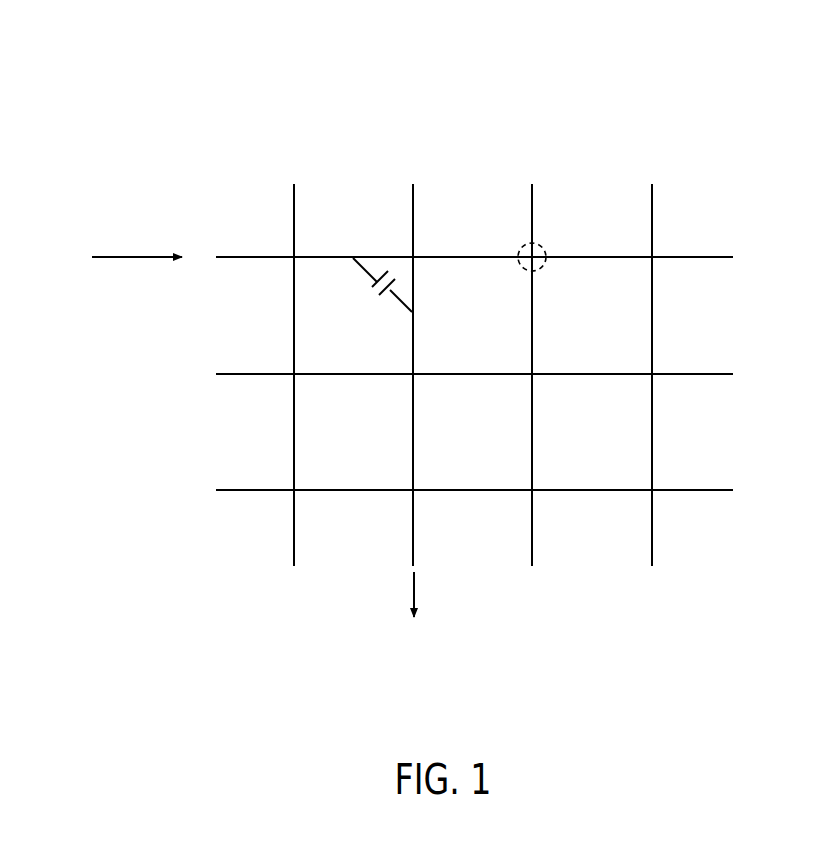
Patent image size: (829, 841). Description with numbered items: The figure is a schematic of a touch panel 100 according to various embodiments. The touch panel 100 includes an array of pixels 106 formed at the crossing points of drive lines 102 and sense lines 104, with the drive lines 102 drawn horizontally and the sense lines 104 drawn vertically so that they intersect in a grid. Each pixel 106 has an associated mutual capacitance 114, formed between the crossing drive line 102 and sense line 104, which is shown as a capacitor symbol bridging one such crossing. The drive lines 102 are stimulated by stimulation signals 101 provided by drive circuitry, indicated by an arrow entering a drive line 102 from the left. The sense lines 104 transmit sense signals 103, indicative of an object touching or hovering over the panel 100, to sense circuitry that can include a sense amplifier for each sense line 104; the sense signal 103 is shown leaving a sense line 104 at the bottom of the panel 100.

The touch panel 100 is at (213, 102).
The stimulation signal 101 is at (130, 260).
The drive line 102 is at (233, 255).
The sense signal 103 is at (417, 588).
The sense line 104 is at (297, 218).
The pixel 106 is at (543, 248).
The mutual capacitance Csig 114 is at (373, 297).